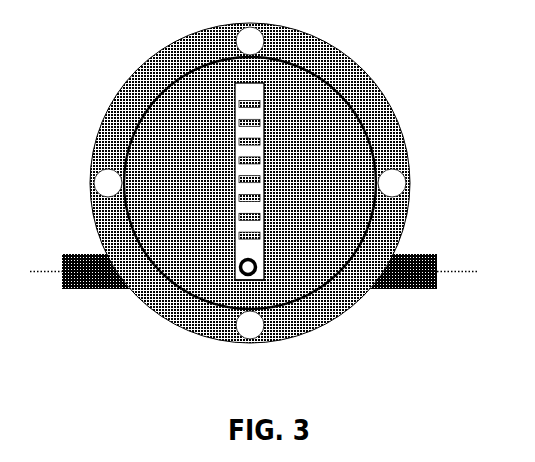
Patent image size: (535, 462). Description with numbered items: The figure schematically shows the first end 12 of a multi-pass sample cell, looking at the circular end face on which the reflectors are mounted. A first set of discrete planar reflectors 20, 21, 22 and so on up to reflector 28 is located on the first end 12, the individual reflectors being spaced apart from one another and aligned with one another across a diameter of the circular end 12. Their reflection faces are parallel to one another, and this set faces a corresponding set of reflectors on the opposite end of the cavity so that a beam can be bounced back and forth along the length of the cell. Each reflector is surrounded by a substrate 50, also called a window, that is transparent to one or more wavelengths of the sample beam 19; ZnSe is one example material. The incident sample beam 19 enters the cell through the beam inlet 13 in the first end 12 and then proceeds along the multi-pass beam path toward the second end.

The first end 12 is at (145, 79).
The planar reflector 28 is at (235, 101).
The substrate 50 is at (265, 183).
The planar reflector 22 is at (234, 215).
The planar reflector 21 is at (234, 233).
The planar reflector 20 is at (233, 252).
The sample beam 19 is at (238, 280).
The beam inlet 13 is at (259, 264).